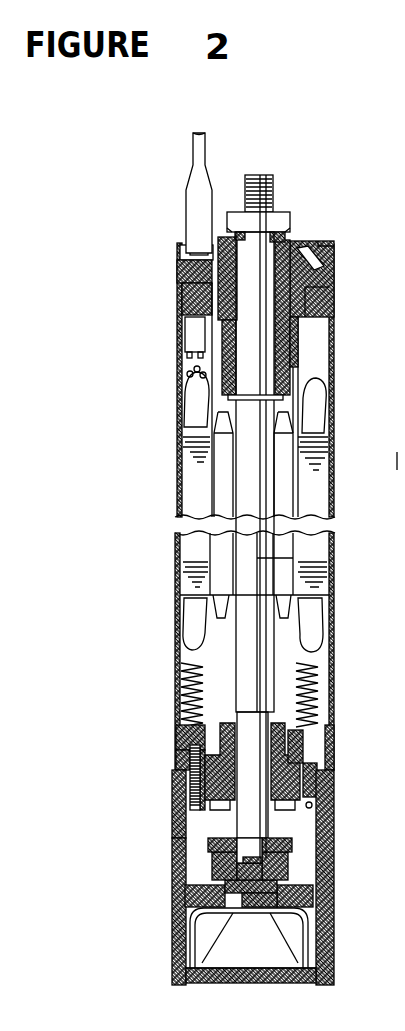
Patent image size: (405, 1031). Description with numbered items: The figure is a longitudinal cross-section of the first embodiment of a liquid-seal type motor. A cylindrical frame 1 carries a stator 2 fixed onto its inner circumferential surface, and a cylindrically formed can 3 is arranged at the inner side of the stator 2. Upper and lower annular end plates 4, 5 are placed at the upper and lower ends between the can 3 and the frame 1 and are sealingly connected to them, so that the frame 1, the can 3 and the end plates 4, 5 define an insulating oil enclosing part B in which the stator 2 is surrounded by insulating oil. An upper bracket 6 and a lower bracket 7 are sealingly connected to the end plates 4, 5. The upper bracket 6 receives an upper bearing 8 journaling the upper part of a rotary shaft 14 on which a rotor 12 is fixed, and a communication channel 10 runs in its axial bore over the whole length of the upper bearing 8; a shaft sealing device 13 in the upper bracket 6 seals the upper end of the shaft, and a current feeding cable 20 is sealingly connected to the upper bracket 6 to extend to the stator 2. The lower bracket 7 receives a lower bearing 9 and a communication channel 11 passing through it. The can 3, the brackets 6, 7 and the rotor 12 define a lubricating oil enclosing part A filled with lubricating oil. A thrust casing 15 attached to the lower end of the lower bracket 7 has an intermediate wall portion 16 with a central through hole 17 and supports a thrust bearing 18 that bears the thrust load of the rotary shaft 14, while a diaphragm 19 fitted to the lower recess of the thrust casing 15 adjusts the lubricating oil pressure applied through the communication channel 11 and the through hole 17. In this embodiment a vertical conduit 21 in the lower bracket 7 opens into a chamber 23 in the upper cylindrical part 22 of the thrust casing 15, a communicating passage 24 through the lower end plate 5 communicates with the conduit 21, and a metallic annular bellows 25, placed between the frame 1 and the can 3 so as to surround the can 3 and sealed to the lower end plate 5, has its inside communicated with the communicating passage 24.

The cylindrical frame 1 is at (177, 500).
The stator 2 is at (200, 486).
The can 3 is at (177, 650).
The upper annular end plate 4 is at (177, 298).
The lower annular end plate 5 is at (177, 745).
The upper bracket 6 is at (182, 267).
The lower bracket 7 is at (177, 790).
The upper bearing 8 is at (302, 353).
The lower bearing 9 is at (300, 778).
The communication channel 10 is at (177, 345).
The communication channel 11 is at (177, 772).
The rotor 12 is at (225, 473).
The shaft sealing device 13 is at (298, 245).
The rotary shaft 14 is at (307, 553).
The thrust casing 15 is at (177, 855).
The intermediate wall portion 16 is at (177, 910).
The through hole 17 is at (308, 915).
The thrust bearing 18 is at (305, 885).
The diaphragm 19 is at (177, 935).
The current feeding cable 20 is at (186, 200).
The conduit 21 is at (308, 803).
The upper cylindrical part 22 is at (320, 843).
The chamber 23 is at (300, 857).
The communicating passage 24 is at (315, 742).
The annular bellows 25 is at (317, 703).
The lubricating oil enclosing part A is at (302, 398).
The insulating oil enclosing part B is at (177, 400).